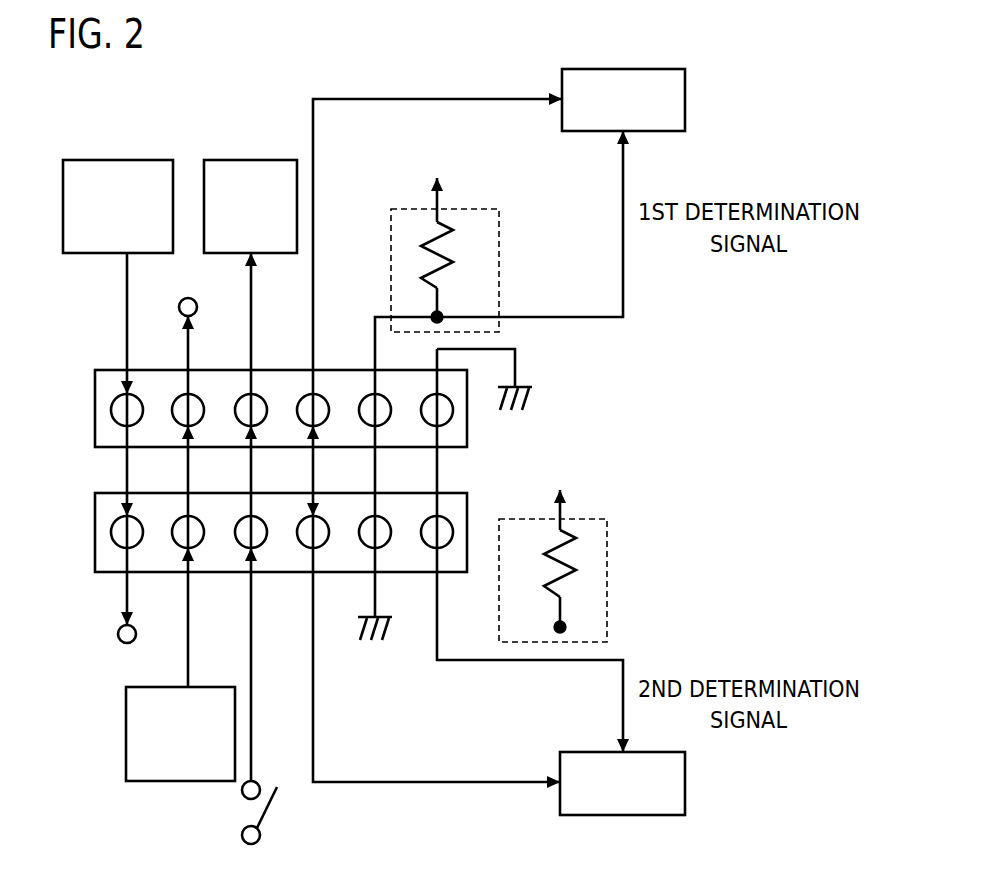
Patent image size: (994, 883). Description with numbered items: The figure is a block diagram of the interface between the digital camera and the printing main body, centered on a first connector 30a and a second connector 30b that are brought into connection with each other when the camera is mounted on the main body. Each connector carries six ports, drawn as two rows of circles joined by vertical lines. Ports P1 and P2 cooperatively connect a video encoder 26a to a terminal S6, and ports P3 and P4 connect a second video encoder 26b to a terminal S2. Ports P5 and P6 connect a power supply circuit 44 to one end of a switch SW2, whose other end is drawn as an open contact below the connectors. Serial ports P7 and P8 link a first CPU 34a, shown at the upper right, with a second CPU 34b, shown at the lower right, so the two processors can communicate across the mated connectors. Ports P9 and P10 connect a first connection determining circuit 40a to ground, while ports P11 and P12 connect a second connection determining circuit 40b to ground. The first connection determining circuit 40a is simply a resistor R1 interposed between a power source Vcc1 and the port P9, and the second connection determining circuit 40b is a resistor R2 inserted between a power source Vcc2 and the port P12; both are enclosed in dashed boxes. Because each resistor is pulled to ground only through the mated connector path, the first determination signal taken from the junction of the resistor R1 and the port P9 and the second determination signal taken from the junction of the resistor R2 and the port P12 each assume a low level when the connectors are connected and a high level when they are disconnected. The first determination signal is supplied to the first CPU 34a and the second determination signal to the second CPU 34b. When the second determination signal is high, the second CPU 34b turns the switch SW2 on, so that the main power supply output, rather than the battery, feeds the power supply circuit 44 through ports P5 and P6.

The video encoder 26a is at (127, 160).
The video encoder 26b is at (180, 781).
The power supply circuit 44 is at (251, 160).
The first CPU 34a is at (625, 69).
The second CPU 34b is at (685, 785).
The first connector 30a is at (95, 410).
The second connector 30b is at (95, 530).
The first connection determining circuit 40a is at (469, 241).
The second connection determining circuit 40b is at (577, 551).
The resistor R1 is at (454, 255).
The resistor R2 is at (544, 563).
The power source Vcc1 is at (436, 186).
The power source Vcc2 is at (561, 495).
The terminal S2 is at (195, 301).
The terminal S6 is at (122, 643).
The switch SW2 is at (273, 800).
The port P1 is at (115, 398).
The port P2 is at (114, 545).
The port P3 is at (197, 396).
The port P4 is at (197, 546).
The port P5 is at (260, 396).
The port P6 is at (260, 546).
The serial port P7 is at (322, 396).
The serial port P8 is at (322, 546).
The port P9 is at (385, 398).
The port P10 is at (385, 548).
The port P11 is at (453, 415).
The port P12 is at (453, 528).